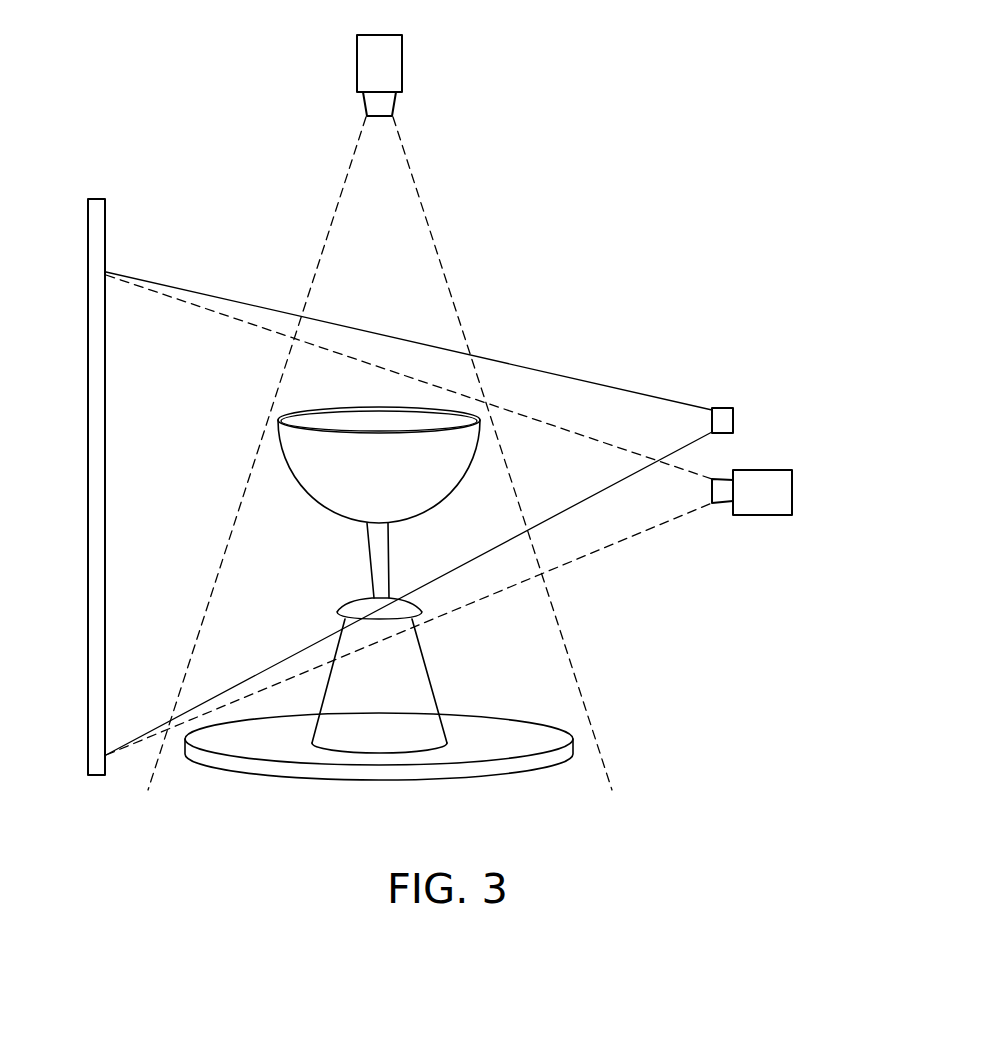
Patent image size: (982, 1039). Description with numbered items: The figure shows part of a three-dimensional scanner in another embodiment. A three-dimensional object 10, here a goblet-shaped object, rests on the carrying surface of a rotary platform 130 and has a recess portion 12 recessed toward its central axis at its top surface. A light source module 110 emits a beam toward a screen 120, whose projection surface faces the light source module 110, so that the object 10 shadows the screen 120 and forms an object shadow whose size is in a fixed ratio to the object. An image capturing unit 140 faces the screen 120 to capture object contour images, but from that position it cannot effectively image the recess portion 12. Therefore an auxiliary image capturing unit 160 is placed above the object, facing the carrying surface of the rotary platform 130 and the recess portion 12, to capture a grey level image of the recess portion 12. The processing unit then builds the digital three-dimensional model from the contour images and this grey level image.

The 3D object 10 is at (384, 562).
The recess portion 12 is at (369, 412).
The light source module 110 is at (734, 420).
The screen 120 is at (106, 229).
The rotary platform 130 is at (488, 730).
The image capturing unit 140 is at (793, 492).
The auxiliary image capturing unit 160 is at (403, 62).